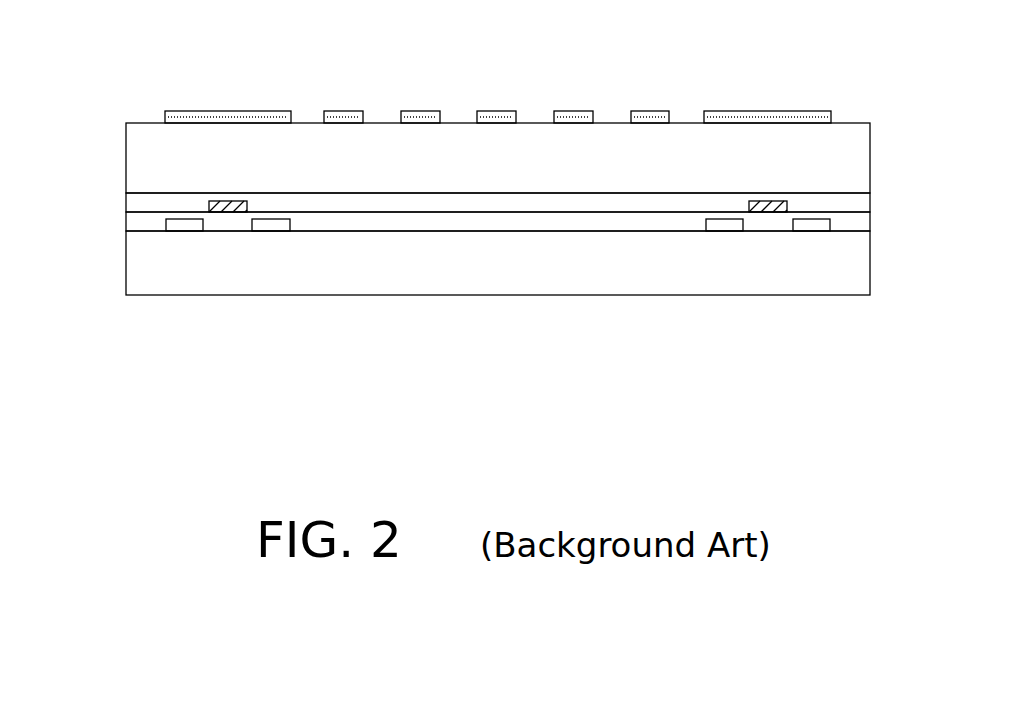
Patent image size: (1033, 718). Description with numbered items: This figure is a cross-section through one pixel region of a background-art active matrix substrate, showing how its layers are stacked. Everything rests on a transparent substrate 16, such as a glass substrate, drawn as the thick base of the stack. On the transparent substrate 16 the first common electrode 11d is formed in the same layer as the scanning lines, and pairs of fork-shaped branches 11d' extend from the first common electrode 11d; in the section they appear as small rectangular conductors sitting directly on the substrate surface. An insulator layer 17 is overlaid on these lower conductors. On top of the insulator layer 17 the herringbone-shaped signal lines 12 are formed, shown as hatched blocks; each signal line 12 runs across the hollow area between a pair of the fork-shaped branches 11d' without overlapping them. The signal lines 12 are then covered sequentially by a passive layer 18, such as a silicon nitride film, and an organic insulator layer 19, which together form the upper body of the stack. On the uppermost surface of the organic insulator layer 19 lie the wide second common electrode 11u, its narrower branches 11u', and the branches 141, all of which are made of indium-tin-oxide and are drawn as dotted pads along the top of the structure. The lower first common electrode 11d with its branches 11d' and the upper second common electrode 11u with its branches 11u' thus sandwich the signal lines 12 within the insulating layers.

The second common electrode 11u is at (498, 78).
The branches 11u' is at (497, 78).
The branches 141 is at (343, 113).
The signal lines 12 is at (215, 201).
The organic insulator layer 19 is at (855, 136).
The passive layer 18 is at (855, 201).
The insulator layer 17 is at (855, 223).
The transparent substrate 16 is at (503, 283).
The first common electrode 11d is at (828, 253).
The fork-shaped branches 11d' is at (161, 251).